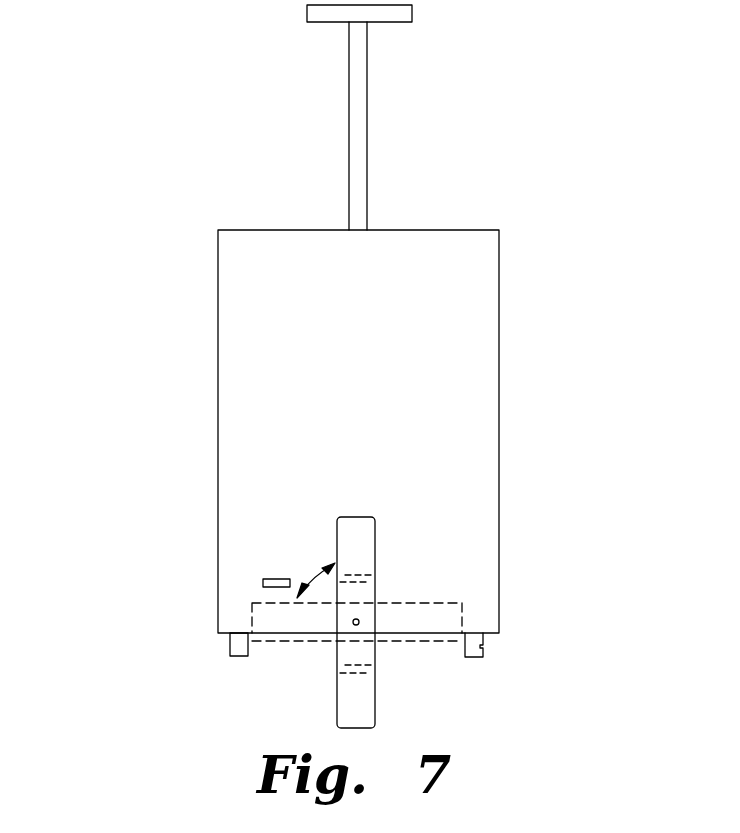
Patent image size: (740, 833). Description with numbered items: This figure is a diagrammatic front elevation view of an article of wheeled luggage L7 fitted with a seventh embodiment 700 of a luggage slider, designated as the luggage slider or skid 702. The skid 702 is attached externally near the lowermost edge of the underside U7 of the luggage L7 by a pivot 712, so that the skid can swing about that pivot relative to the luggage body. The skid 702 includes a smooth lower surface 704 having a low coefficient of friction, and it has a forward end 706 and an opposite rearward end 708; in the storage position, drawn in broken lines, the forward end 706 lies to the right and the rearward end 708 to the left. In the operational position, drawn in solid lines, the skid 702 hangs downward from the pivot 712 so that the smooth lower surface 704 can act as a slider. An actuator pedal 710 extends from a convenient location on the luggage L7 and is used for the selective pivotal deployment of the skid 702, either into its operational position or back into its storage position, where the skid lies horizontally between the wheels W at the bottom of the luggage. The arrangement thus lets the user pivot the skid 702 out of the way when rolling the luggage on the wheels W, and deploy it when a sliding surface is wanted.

The luggage slider embodiment 700 is at (267, 322).
The luggage slider or skid 702 is at (418, 603).
The smooth lower surface 704 is at (348, 545).
The forward end 706 is at (357, 517).
The rearward end 708 is at (337, 698).
The actuator pedal 710 is at (263, 583).
The pivot 712 is at (359, 621).
The wheeled luggage L7 is at (218, 344).
The underside U7 is at (377, 331).
The wheels W is at (229, 652).